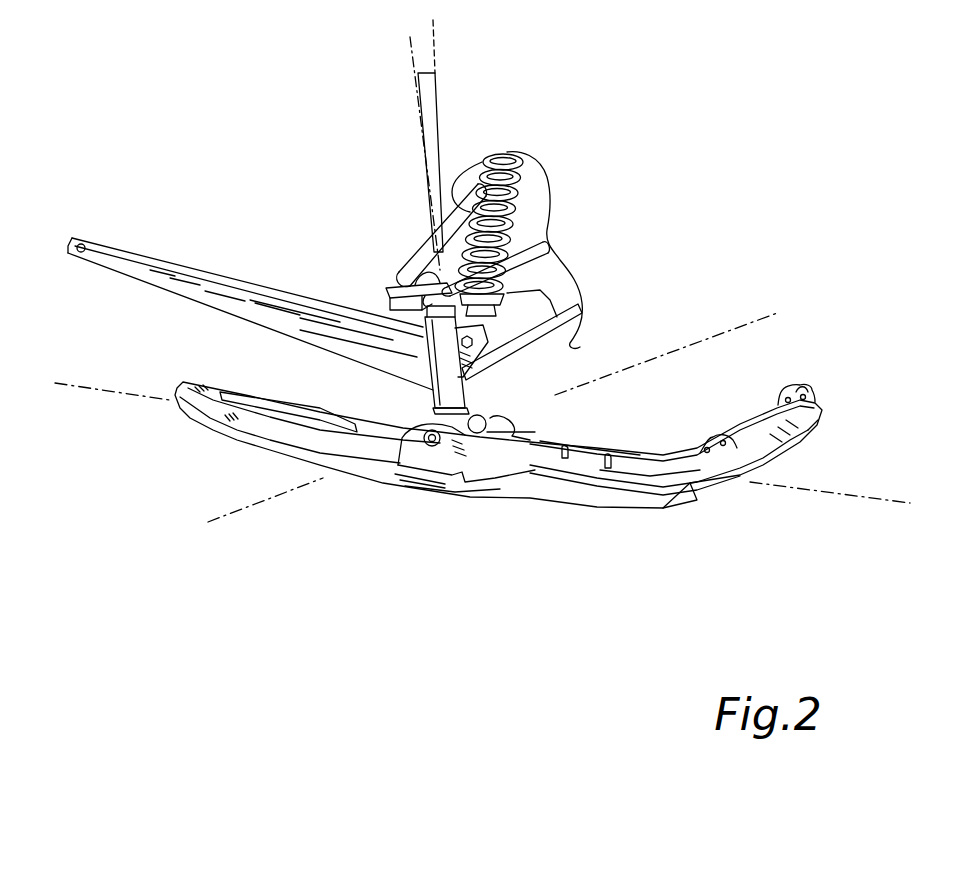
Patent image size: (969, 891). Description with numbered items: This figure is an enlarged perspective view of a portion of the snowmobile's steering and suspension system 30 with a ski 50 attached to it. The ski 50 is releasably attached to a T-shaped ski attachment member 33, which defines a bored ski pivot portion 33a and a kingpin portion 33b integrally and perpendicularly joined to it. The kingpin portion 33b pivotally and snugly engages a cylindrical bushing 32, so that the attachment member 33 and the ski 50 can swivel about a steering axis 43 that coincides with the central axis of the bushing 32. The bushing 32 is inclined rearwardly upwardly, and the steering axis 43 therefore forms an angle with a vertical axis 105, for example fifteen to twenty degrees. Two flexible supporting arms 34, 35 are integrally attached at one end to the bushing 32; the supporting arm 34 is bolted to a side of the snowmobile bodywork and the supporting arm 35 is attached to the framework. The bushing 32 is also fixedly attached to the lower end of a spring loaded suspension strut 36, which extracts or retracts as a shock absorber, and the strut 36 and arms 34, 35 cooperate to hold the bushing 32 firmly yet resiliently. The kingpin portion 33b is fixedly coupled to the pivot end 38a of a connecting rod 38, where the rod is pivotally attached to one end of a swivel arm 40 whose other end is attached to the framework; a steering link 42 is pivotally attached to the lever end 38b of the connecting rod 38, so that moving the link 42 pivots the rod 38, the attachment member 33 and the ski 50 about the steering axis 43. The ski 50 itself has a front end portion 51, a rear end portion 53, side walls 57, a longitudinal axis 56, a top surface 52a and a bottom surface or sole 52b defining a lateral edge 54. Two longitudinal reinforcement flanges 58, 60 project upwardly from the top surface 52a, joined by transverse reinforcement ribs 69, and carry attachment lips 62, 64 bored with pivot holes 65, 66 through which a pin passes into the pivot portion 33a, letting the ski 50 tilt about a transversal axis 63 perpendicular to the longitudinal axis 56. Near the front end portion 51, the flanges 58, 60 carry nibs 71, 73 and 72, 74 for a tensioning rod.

The steering and suspension system 30 is at (406, 238).
The cylindrical bushing 32 is at (433, 390).
The T-shaped ski attachment member 33 is at (480, 452).
The ski pivot portion 33a is at (476, 434).
The kingpin portion 33b is at (533, 312).
The supporting arm 34 is at (200, 287).
The supporting arm 35 is at (583, 308).
The spring loaded suspension strut 36 is at (547, 177).
The connecting rod 38 is at (379, 297).
The pivot end 38a is at (390, 290).
The lever end 38b is at (393, 292).
The swivel arm 40 is at (548, 232).
The steering link 42 is at (460, 165).
The steering axis 43 is at (412, 40).
The ski 50 is at (630, 513).
The front end portion 51 is at (807, 420).
The top surface 52a is at (206, 382).
The bottom surface 52b is at (772, 452).
The rear end portion 53 is at (200, 402).
The lateral edge 54 is at (242, 447).
The longitudinal axis 56 is at (853, 493).
The side wall 57 is at (483, 490).
The longitudinal reinforcement flange 58 is at (638, 470).
The longitudinal reinforcement flange 60 is at (585, 448).
The attachment lip 62 is at (422, 440).
The transversal axis 63 is at (752, 318).
The attachment lip 64 is at (482, 418).
The pivot hole 65 is at (428, 446).
The pivot hole 66 is at (512, 435).
The transverse reinforcement ribs 69 is at (428, 448).
The nib 71 is at (717, 435).
The nib 72 is at (784, 392).
The nib 73 is at (726, 440).
The nib 74 is at (807, 390).
The vertical axis 105 is at (437, 90).